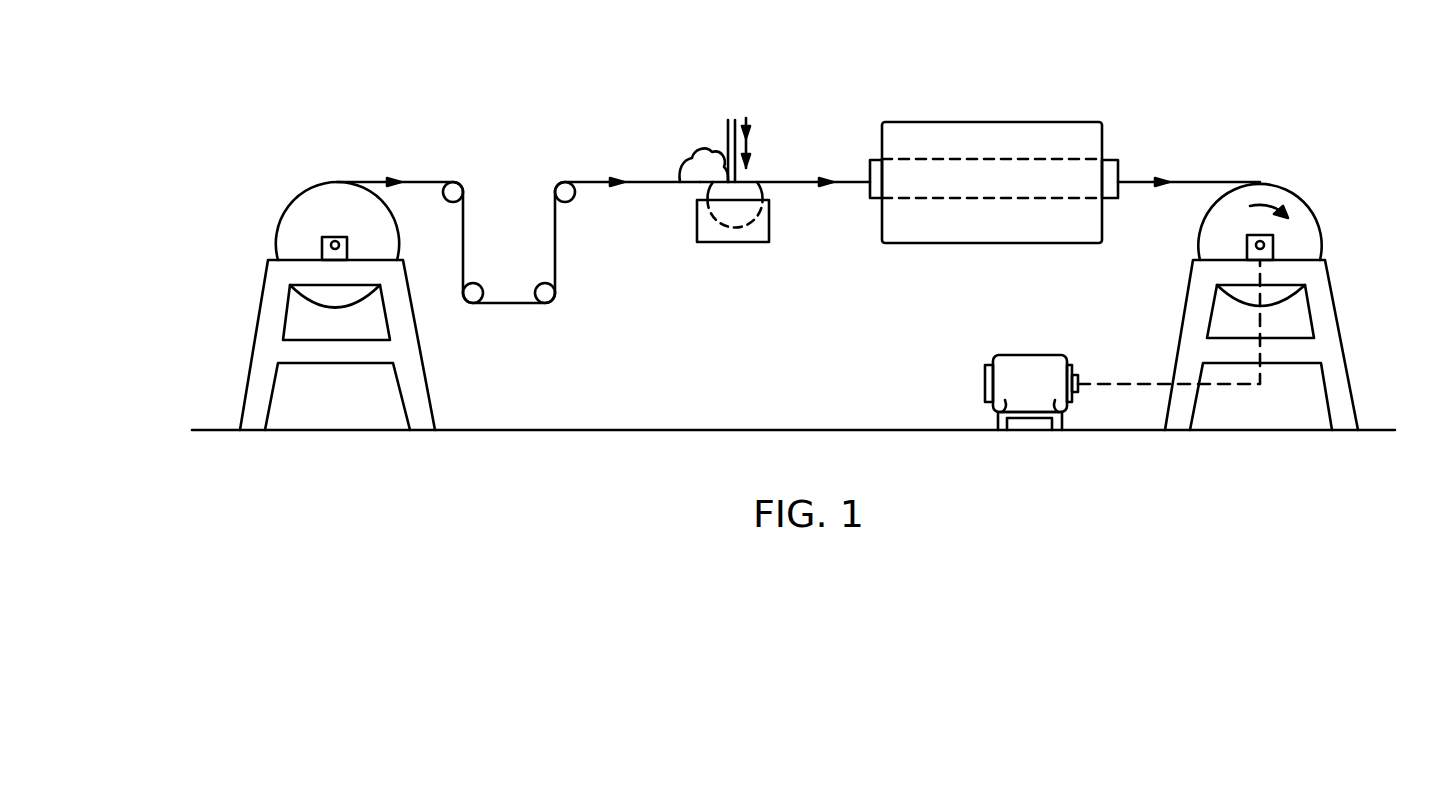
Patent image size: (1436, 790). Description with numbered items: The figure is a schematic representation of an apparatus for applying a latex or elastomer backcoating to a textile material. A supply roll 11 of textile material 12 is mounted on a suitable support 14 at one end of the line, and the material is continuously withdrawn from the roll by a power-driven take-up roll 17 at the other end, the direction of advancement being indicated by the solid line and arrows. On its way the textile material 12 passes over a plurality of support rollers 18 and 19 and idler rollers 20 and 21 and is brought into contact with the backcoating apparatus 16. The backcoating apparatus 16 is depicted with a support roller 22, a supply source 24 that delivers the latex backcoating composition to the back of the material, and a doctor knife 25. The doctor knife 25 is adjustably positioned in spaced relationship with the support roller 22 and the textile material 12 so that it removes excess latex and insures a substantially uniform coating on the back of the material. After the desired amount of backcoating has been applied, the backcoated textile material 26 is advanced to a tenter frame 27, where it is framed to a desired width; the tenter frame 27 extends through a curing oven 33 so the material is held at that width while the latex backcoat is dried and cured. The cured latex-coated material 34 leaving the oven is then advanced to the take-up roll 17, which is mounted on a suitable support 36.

The supply roll 11 is at (323, 190).
The textile material 12 is at (434, 182).
The support 14 is at (265, 322).
The backcoating apparatus 16 is at (731, 82).
The take-up roll 17 is at (1280, 190).
The support roller 18 is at (452, 200).
The support roller 19 is at (570, 200).
The idler roller 20 is at (475, 285).
The idler roller 21 is at (555, 300).
The support roller 22 is at (780, 223).
The supply source 24 is at (680, 162).
The doctor knife 25 is at (728, 160).
The backcoated textile material 26 is at (780, 182).
The tenter frame 27 is at (1120, 195).
The curing oven 33 is at (1042, 122).
The cured latex-coated material 34 is at (1198, 182).
The support 36 is at (1345, 368).